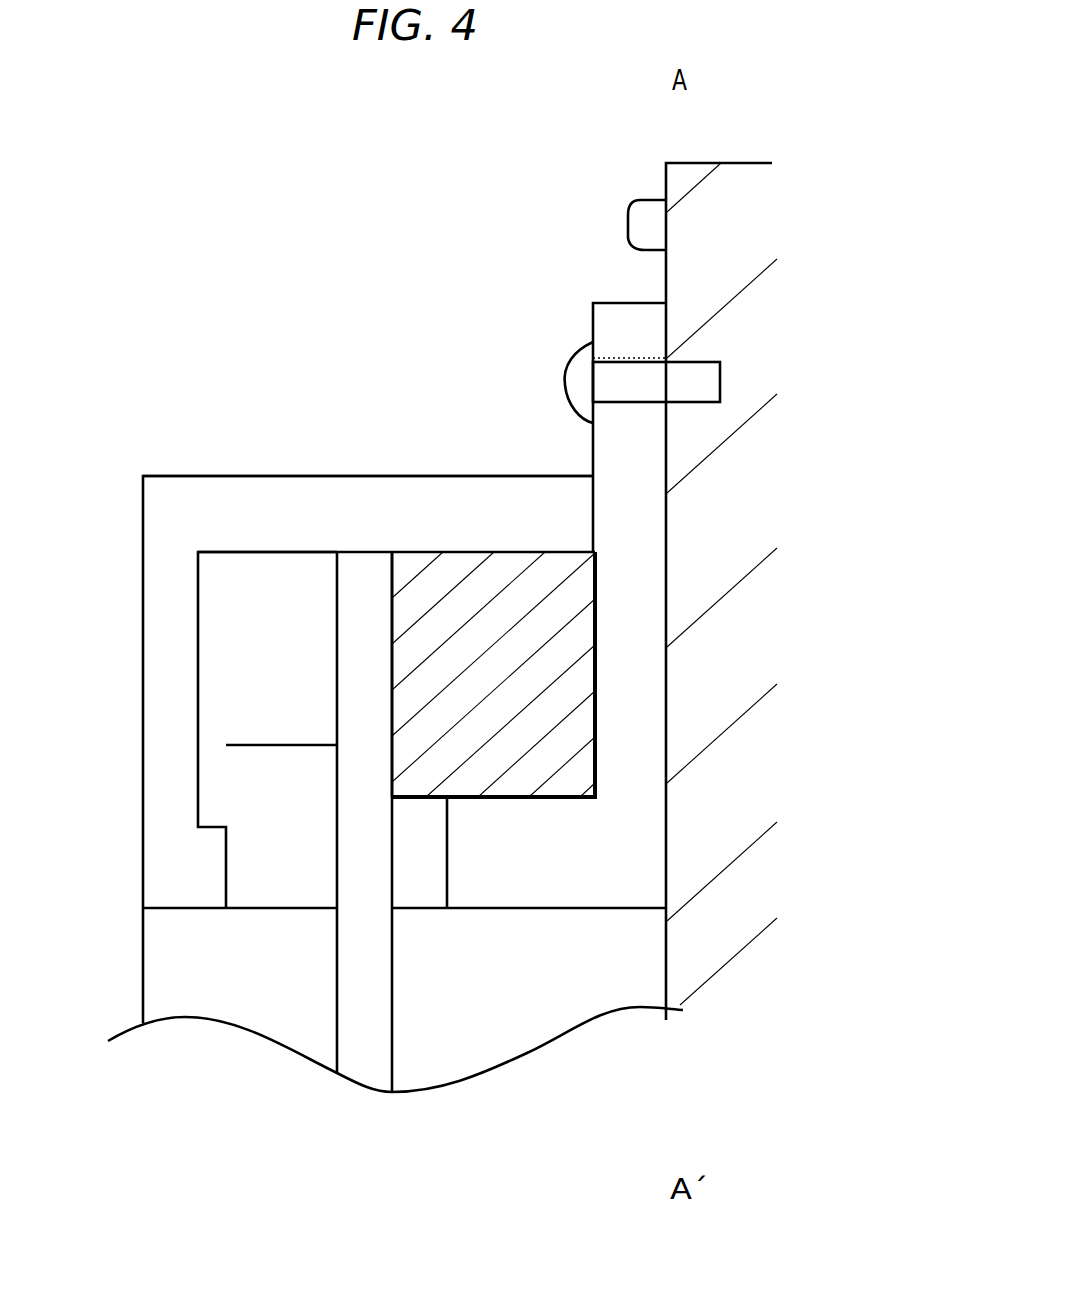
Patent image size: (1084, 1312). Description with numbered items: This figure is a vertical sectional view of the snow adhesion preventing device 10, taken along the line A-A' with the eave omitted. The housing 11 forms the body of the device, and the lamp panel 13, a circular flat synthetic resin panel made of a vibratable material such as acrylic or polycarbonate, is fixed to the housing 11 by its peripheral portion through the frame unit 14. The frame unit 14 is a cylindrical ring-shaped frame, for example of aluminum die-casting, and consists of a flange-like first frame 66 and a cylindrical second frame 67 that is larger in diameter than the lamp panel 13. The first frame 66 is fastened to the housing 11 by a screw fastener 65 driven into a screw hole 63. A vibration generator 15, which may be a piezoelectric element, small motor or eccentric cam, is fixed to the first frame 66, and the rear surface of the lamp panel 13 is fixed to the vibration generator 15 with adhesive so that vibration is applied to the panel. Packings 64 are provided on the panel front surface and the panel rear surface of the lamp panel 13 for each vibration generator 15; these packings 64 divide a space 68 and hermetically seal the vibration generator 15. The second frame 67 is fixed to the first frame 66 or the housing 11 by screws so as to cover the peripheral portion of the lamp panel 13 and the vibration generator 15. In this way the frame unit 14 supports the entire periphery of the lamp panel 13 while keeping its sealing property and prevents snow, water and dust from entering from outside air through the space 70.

The snow adhesion preventing device 10 is at (218, 343).
The housing 11 is at (666, 248).
The lamp panel 13 is at (365, 1060).
The frame unit 14 is at (443, 338).
The vibration generator 15 is at (562, 600).
The screw hole 63 is at (640, 405).
The packing 64 is at (418, 827).
The screw fastener 65 is at (693, 378).
The first frame 66 is at (627, 455).
The second frame 67 is at (240, 498).
The space 68 is at (237, 647).
The space 70 is at (503, 993).